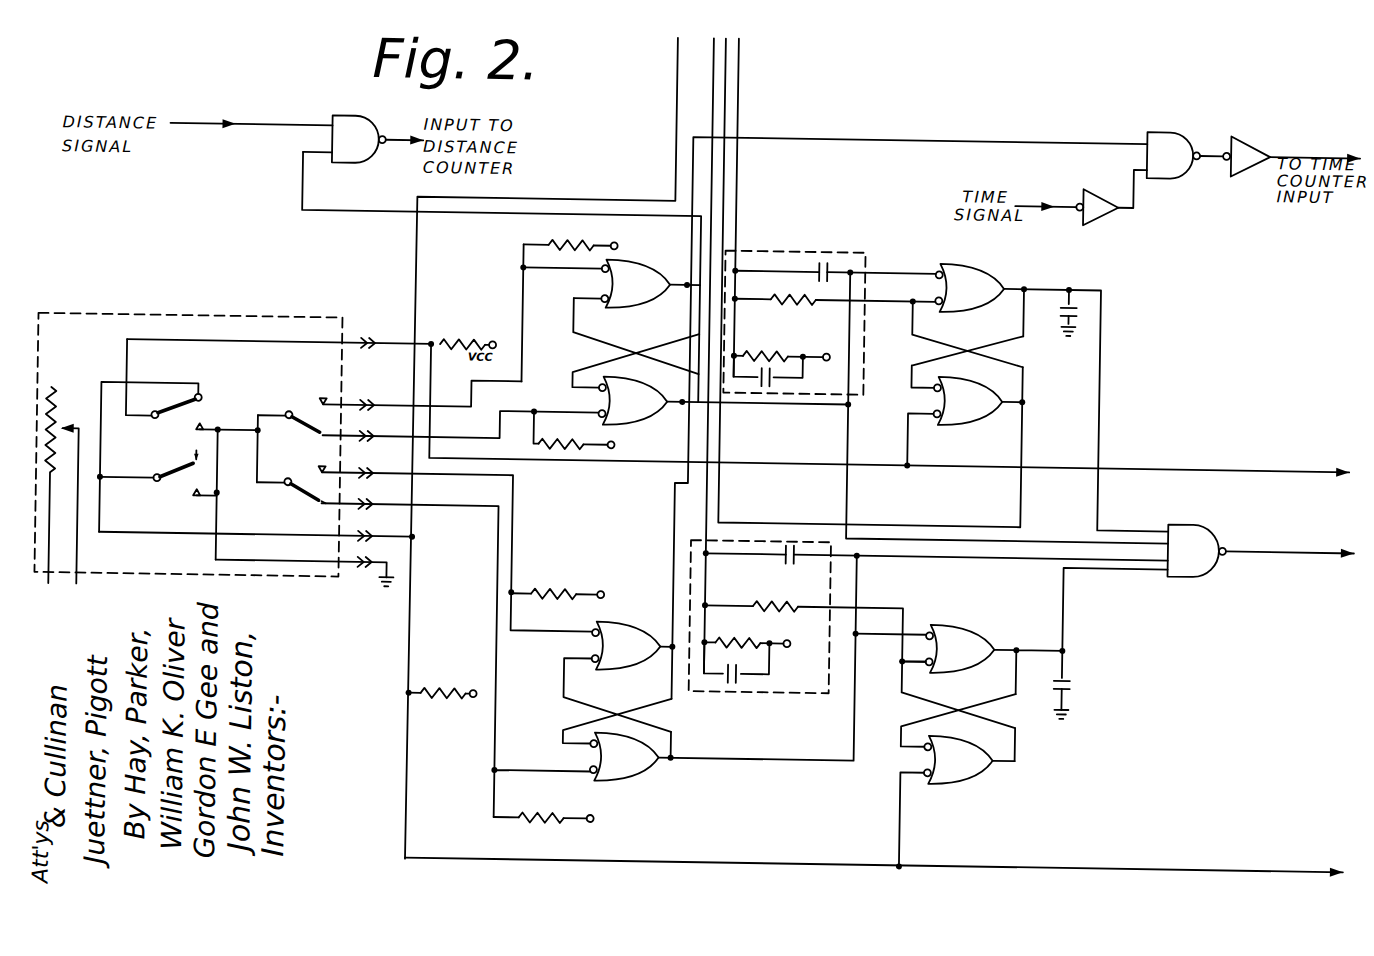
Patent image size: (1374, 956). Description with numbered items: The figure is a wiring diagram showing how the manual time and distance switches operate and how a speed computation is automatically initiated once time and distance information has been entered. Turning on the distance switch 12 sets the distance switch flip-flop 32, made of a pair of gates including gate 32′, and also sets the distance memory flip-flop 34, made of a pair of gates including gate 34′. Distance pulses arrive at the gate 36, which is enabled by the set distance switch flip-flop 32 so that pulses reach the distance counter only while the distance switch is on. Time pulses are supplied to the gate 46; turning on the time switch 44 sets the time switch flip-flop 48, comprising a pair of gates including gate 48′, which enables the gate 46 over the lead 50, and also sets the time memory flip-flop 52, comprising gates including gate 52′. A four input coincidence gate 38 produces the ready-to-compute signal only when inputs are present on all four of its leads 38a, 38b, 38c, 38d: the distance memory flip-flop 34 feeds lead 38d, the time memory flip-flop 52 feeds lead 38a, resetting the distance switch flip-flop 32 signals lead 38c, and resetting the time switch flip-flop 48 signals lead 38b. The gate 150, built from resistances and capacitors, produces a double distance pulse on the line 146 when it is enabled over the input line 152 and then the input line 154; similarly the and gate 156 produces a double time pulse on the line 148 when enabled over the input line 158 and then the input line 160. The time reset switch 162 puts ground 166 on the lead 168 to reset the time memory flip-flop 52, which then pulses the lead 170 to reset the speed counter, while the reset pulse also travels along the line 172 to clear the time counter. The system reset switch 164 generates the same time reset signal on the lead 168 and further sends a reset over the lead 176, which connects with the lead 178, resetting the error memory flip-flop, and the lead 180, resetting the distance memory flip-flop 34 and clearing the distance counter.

The gate 36 is at (338, 119).
The lead 178 is at (671, 66).
The lead 170 is at (721, 62).
The line 146 is at (711, 106).
The line 148 is at (733, 96).
The lead 50 is at (1000, 137).
The gate 46 is at (1175, 125).
The lead 168 is at (252, 323).
The and gate 156 is at (831, 248).
The input line 158 is at (884, 296).
The gate 52′ is at (985, 270).
The gate 48′ is at (635, 276).
The time switch flip-flop 48 is at (552, 333).
The time reset switch 162 is at (211, 415).
The time switch 44 is at (318, 378).
The system reset switch 164 is at (158, 481).
The distance switch 12 is at (298, 485).
The input line 160 is at (762, 401).
The time memory flip-flop 52 is at (1035, 356).
The line 172 is at (1160, 446).
The lead 38a is at (1120, 524).
The lead 38b is at (1157, 536).
The four input coincidence gate 38 is at (1199, 519).
The lead 176 is at (143, 541).
The input line 152 is at (881, 600).
The gate 32′ is at (650, 608).
The ground 166 is at (384, 588).
The gate 34′ is at (977, 624).
The lead 38c is at (1107, 555).
The lead 38d is at (1150, 566).
The distance switch flip-flop 32 is at (566, 714).
The gate 150 is at (791, 693).
The distance memory flip-flop 34 is at (1011, 710).
The lead 180 is at (1059, 837).
The input line 154 is at (747, 759).